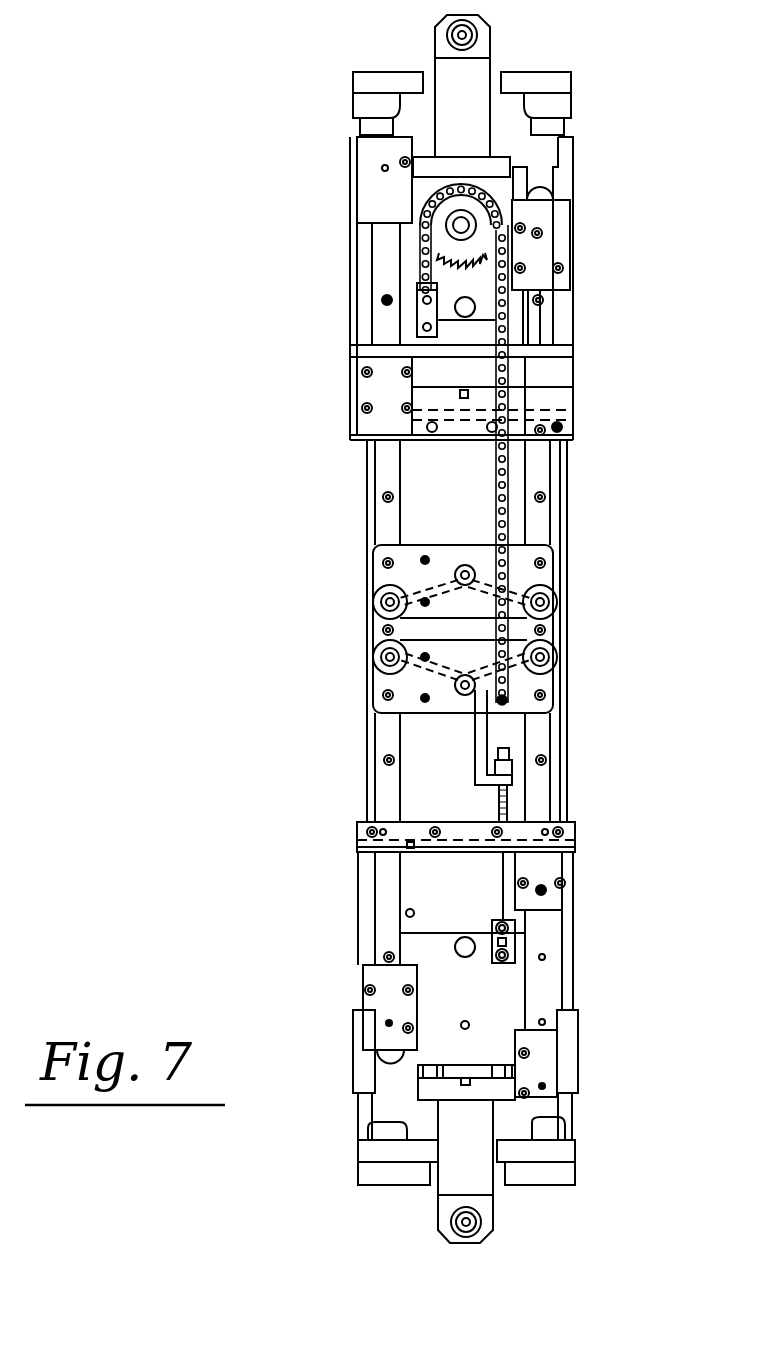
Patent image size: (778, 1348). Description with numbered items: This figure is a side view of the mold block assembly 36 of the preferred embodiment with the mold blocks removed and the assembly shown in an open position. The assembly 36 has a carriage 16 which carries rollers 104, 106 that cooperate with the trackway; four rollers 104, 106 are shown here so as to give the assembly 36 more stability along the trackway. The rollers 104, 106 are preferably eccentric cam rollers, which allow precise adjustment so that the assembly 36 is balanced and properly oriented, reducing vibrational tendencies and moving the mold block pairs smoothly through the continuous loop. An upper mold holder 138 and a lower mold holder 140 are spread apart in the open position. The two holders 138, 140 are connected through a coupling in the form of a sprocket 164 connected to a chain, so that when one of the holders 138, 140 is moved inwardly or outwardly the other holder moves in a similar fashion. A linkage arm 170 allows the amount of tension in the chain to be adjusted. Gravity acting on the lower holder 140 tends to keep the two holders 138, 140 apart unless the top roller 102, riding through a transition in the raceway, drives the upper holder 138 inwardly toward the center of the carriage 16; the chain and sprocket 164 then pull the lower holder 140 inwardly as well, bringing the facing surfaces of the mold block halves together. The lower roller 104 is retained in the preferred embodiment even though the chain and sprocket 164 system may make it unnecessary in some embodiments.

The roller 102 is at (478, 28).
The sprocket 164 is at (467, 250).
The upper mold holder 138 is at (352, 336).
The mold block assembly 36 is at (421, 695).
The roller 104 is at (390, 602).
The roller 106 is at (390, 657).
The carriage 16 is at (368, 753).
The linkage arm 170 is at (487, 727).
The lower mold holder 140 is at (360, 868).